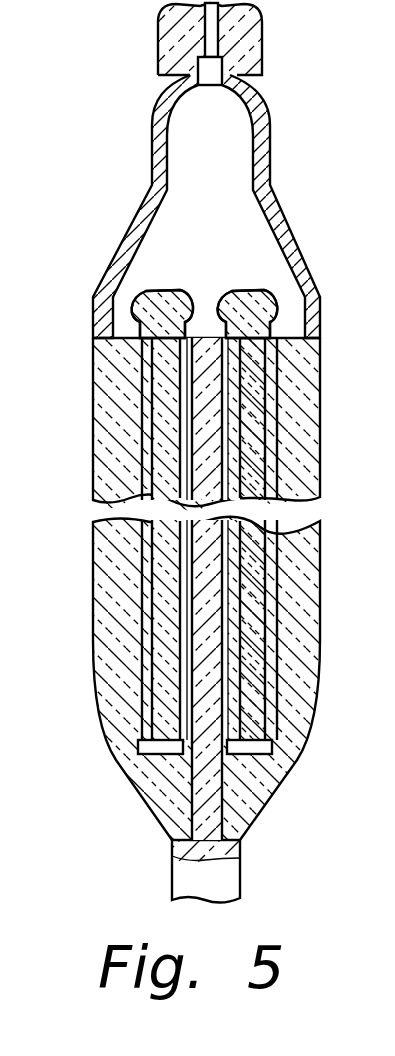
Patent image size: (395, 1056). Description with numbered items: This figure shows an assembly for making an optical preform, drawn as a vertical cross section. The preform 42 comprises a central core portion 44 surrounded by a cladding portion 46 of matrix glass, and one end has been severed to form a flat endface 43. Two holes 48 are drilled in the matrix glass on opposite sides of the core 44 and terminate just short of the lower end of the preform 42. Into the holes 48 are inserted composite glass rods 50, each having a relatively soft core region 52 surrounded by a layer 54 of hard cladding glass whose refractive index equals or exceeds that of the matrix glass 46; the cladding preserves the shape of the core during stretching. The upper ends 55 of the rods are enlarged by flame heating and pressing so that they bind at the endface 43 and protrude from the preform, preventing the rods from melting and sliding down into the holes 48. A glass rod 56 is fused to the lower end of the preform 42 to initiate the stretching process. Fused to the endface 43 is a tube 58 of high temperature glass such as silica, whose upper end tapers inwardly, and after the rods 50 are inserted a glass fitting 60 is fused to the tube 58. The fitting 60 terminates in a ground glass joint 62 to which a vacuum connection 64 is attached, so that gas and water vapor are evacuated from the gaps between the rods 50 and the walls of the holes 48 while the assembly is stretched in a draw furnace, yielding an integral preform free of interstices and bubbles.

The preform 42 is at (92, 361).
The endface 43 is at (300, 333).
The core portion 44 is at (210, 813).
The cladding portion 46 is at (312, 382).
The holes 48 is at (140, 750).
The glass rods 50 is at (160, 456).
The core region 52 is at (167, 557).
The layer of cladding glass 54 is at (145, 626).
The upper ends 55 is at (222, 306).
The glass rod 56 is at (240, 878).
The tube 58 is at (112, 275).
The glass fitting 60 is at (278, 198).
The ground glass joint 62 is at (190, 62).
The vacuum connection 64 is at (262, 42).